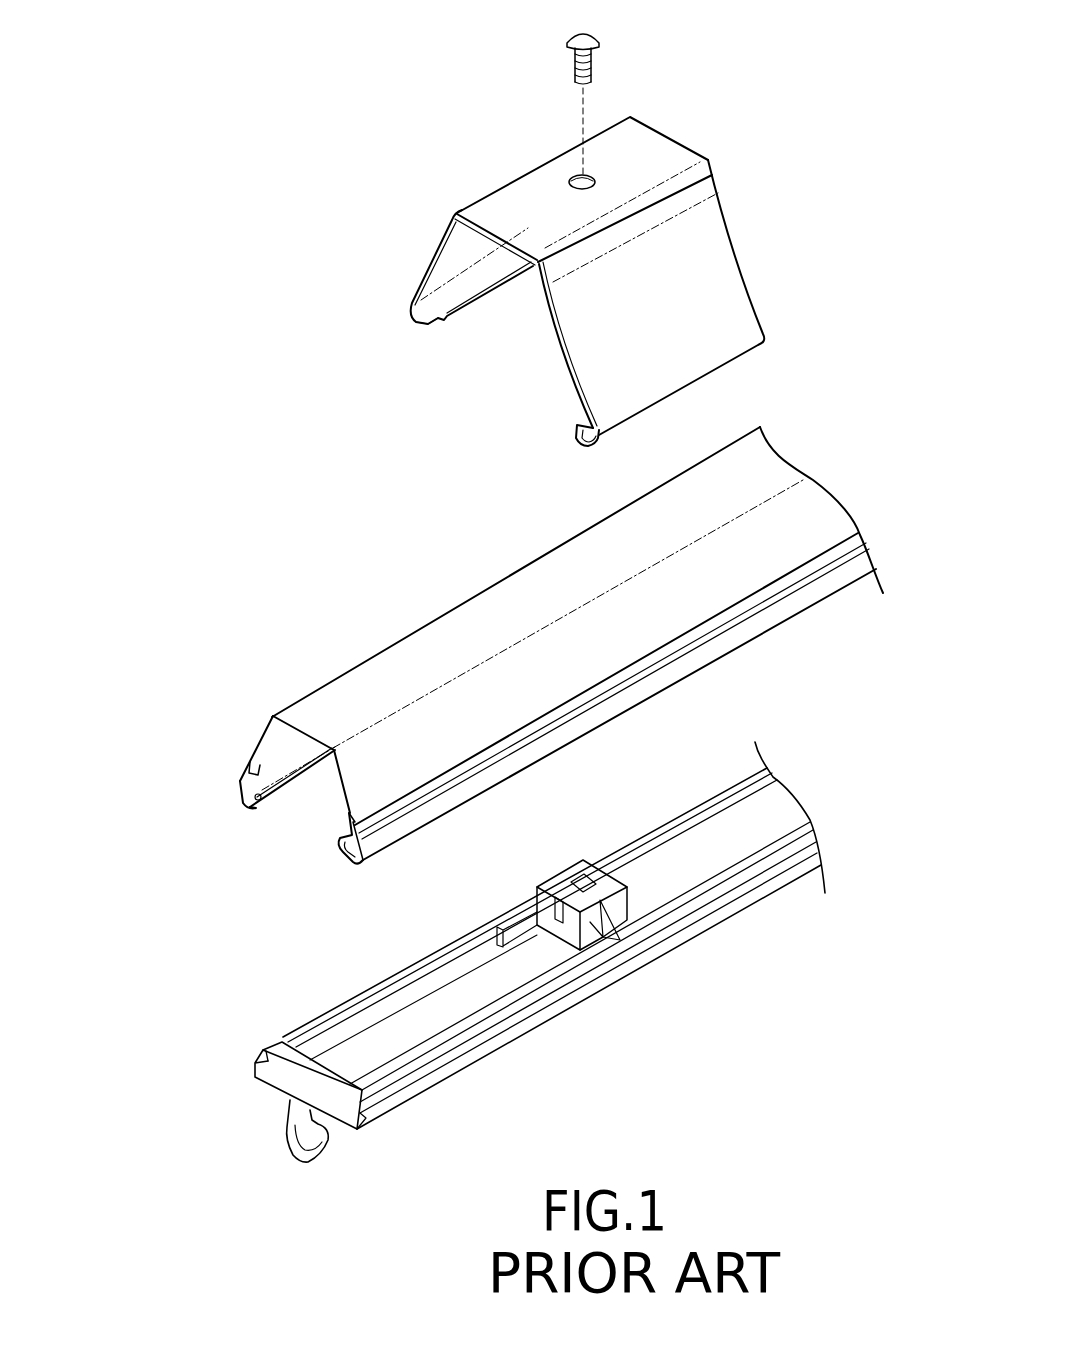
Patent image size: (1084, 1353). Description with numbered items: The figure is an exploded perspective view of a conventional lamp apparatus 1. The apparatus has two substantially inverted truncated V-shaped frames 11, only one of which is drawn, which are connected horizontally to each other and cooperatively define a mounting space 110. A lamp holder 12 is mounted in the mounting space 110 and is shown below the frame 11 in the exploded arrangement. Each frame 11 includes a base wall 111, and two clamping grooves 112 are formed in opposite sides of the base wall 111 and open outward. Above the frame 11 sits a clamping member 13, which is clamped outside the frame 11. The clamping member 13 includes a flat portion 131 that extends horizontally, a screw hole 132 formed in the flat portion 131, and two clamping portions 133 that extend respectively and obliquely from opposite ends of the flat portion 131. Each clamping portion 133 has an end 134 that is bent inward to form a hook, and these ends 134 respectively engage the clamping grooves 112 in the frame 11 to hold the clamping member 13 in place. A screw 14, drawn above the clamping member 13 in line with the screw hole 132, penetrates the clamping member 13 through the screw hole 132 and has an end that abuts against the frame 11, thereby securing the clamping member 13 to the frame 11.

The conventional lamp apparatus 1 is at (250, 210).
The frame 11 is at (366, 635).
The mounting space 110 is at (312, 812).
The base wall 111 is at (505, 603).
The clamping groove 112 is at (252, 765).
The lamp holder 12 is at (463, 1008).
The clamping member 13 is at (474, 162).
The flat portion 131 is at (663, 147).
The screw hole 132 is at (576, 178).
The clamping portion 133 is at (420, 278).
The end 134 is at (413, 320).
The screw 14 is at (600, 34).